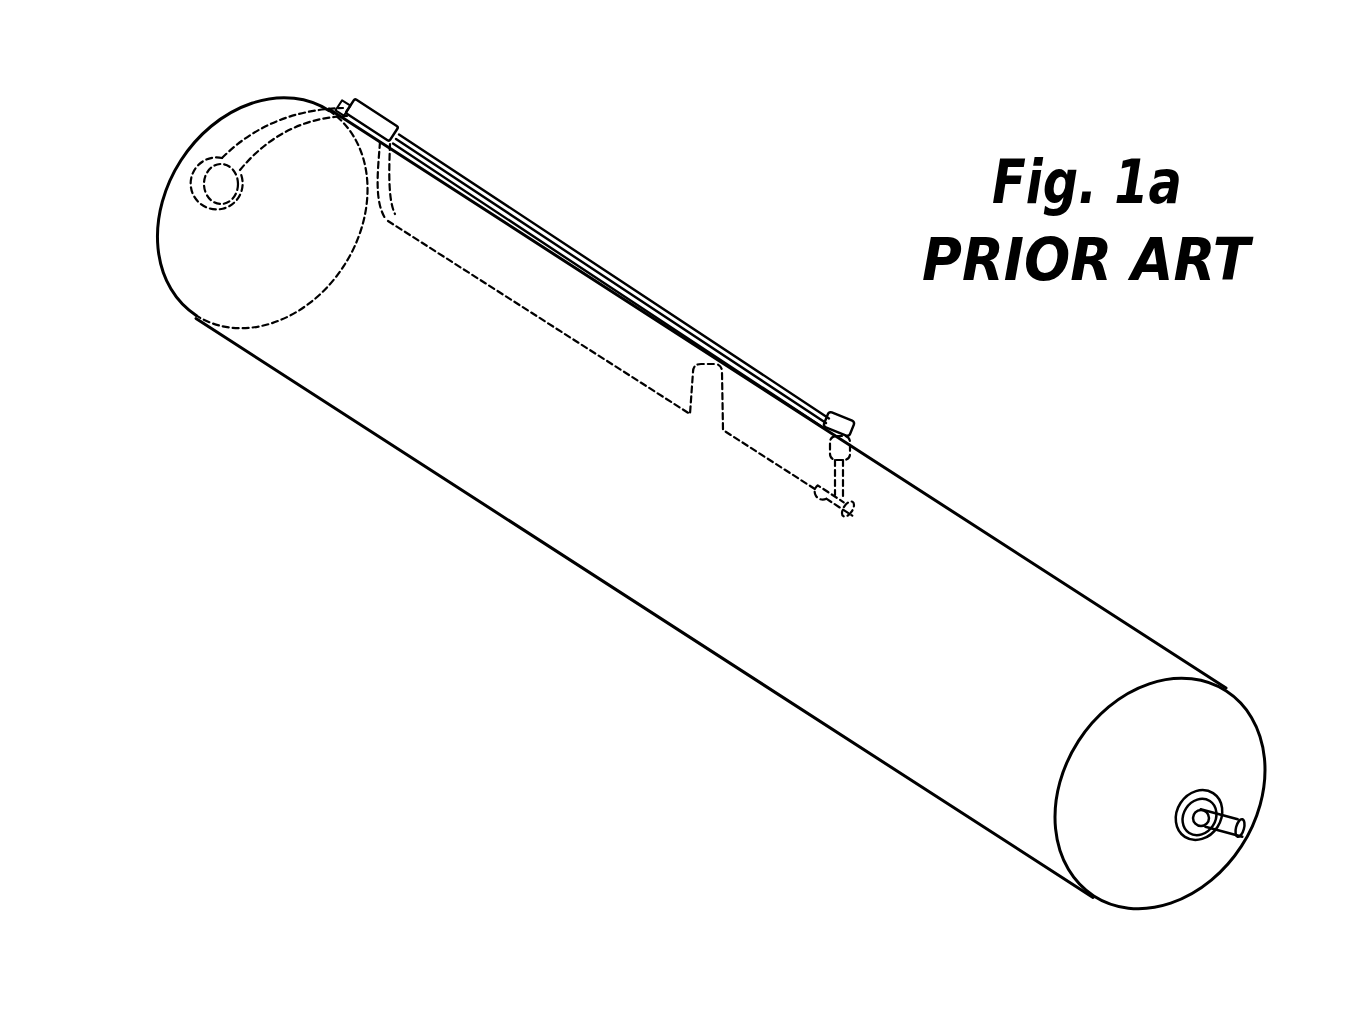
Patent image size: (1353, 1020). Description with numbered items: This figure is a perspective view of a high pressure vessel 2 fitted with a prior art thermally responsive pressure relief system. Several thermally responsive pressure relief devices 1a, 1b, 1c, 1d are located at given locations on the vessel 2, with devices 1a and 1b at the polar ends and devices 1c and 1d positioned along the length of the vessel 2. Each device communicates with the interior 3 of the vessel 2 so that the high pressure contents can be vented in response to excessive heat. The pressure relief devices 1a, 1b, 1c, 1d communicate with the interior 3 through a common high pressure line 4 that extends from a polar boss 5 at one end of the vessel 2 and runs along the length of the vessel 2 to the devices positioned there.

The thermally responsive pressure relief device 1a is at (193, 162).
The thermally responsive pressure relief device 1b is at (1248, 838).
The thermally responsive pressure relief device 1c is at (381, 151).
The thermally responsive pressure relief device 1d is at (849, 453).
The high pressure vessel 2 is at (1042, 565).
The interior 3 is at (825, 589).
The high pressure line 4 is at (647, 300).
The polar boss 5 is at (237, 160).